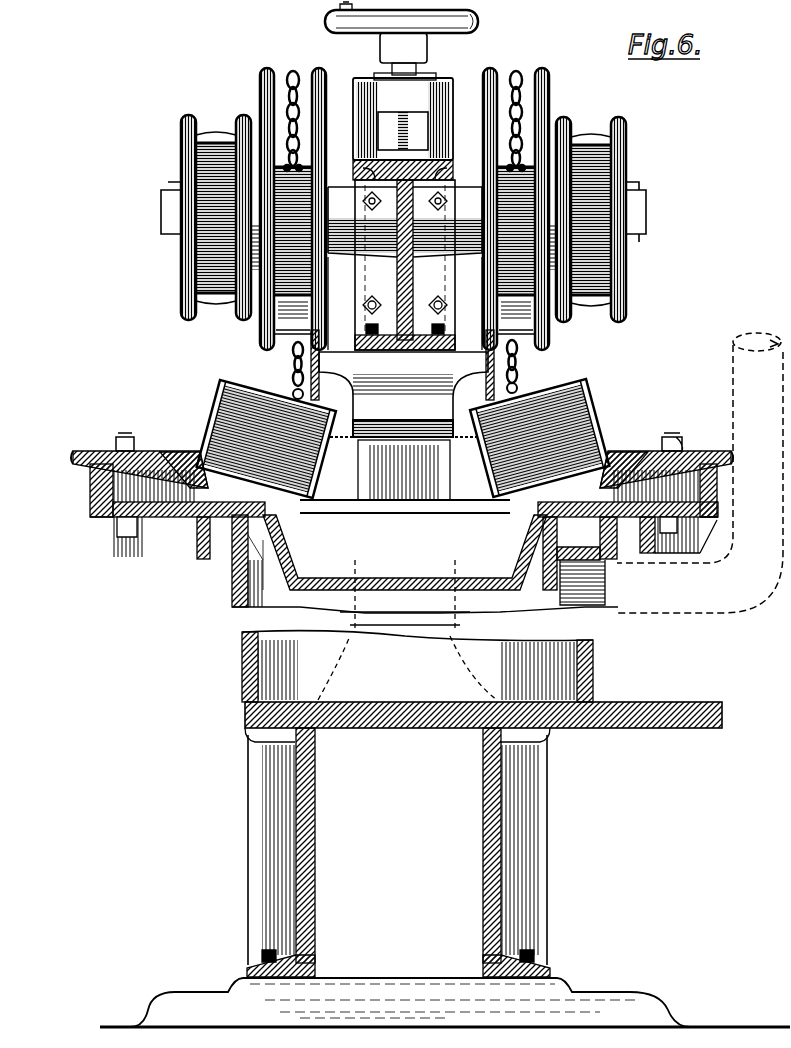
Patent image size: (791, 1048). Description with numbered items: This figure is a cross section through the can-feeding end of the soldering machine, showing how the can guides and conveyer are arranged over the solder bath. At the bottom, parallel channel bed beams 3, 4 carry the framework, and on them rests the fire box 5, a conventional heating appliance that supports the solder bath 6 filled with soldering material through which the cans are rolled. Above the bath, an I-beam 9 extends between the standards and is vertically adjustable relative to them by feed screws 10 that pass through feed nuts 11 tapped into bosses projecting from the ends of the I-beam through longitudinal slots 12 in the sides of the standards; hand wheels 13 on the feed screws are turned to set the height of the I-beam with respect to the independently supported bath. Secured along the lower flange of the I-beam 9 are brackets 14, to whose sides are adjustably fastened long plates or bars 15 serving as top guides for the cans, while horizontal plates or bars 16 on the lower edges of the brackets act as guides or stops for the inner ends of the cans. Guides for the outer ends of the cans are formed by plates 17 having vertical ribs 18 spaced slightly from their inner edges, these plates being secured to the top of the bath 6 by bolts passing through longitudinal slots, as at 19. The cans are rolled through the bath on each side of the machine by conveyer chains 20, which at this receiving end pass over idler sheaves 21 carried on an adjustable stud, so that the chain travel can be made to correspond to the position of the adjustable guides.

The bed beam 3 is at (317, 830).
The bed beam 4 is at (494, 838).
The fire box 5 is at (590, 680).
The solder bath 6 is at (520, 540).
The I-beam 9 is at (415, 262).
The feed screw 10 is at (372, 125).
The feed nut 11 is at (200, 283).
The longitudinal slot 12 is at (386, 134).
The hand wheel 13 is at (484, 22).
The bracket 14 is at (245, 408).
The top guide plate 15 is at (300, 396).
The inner end guide plate 16 is at (482, 440).
The outer guide plate 17 is at (90, 456).
The vertical rib 18 is at (195, 450).
The bolt and longitudinal slot 19 is at (120, 438).
The conveyer chain 20 is at (292, 72).
The idler sheave 21 is at (262, 80).